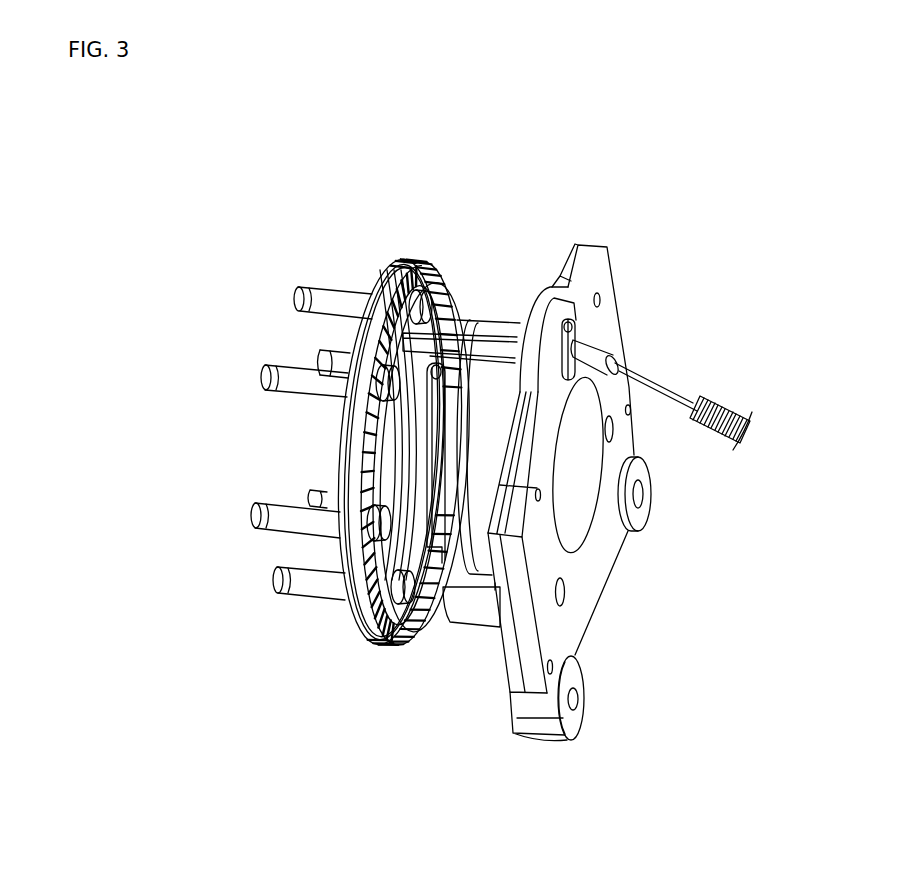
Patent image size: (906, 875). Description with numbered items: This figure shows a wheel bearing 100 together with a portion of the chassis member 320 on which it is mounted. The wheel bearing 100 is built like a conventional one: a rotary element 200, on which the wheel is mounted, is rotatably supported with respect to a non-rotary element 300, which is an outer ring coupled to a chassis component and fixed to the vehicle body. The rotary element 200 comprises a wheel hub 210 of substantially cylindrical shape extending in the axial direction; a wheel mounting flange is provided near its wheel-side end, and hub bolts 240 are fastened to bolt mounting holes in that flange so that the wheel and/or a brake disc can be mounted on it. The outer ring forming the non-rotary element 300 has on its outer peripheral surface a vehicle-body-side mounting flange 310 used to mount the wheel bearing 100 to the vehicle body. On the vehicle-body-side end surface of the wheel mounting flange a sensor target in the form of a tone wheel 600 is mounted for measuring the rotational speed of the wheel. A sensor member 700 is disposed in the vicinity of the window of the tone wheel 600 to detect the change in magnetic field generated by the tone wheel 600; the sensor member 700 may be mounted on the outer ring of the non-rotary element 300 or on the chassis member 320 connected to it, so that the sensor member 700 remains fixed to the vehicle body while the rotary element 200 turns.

The wheel bearing 100 is at (645, 111).
The rotary element 200 is at (355, 421).
The wheel hub 210 is at (357, 617).
The hub bolts 240 is at (293, 372).
The non-rotary element 300 is at (559, 492).
The vehicle-body-side mounting flange 310 is at (440, 630).
The chassis member 320 is at (590, 603).
The tone wheel 600 is at (440, 270).
The sensor member 700 is at (450, 310).